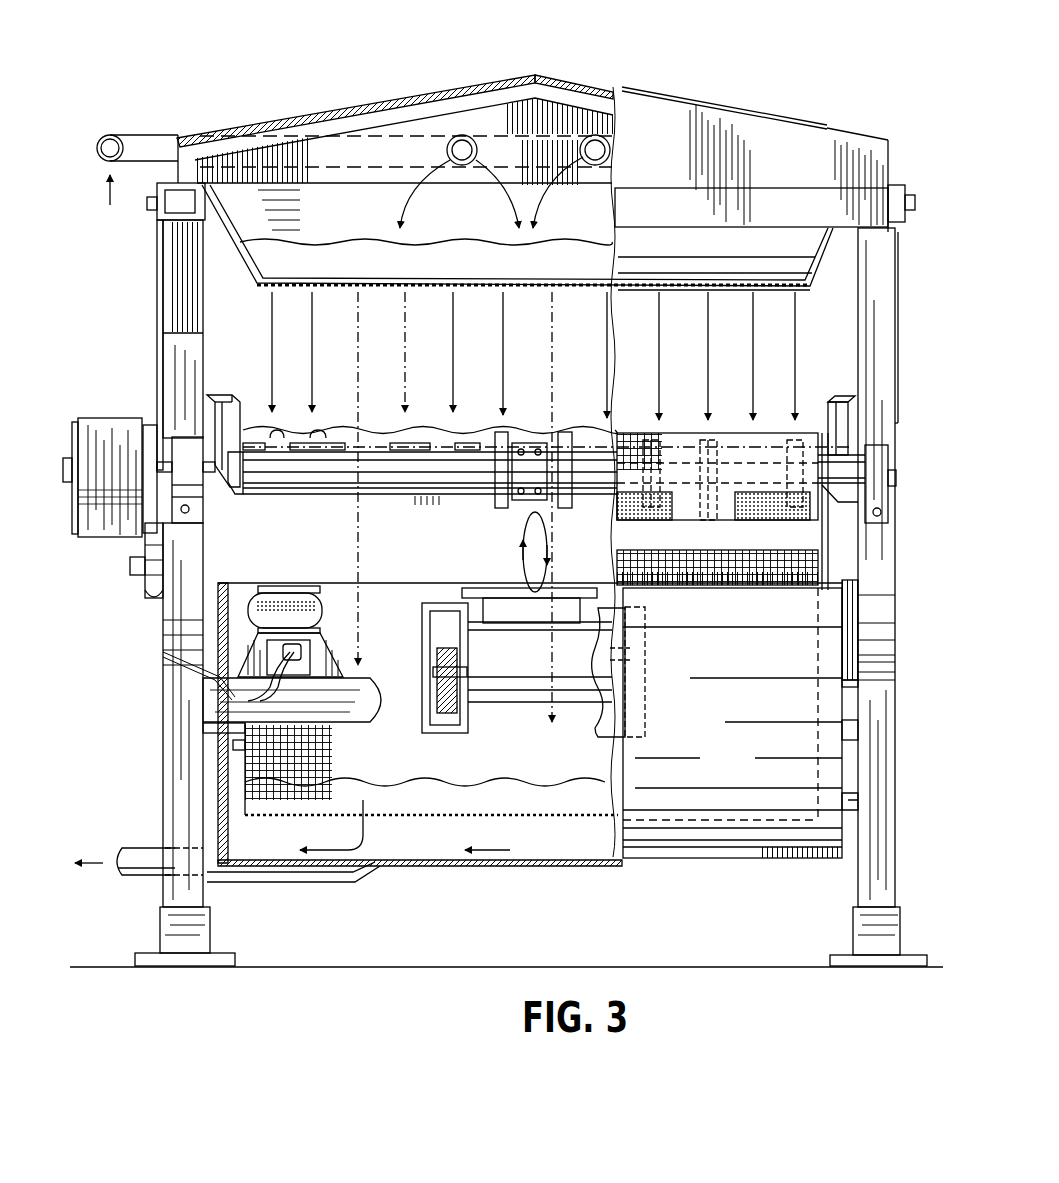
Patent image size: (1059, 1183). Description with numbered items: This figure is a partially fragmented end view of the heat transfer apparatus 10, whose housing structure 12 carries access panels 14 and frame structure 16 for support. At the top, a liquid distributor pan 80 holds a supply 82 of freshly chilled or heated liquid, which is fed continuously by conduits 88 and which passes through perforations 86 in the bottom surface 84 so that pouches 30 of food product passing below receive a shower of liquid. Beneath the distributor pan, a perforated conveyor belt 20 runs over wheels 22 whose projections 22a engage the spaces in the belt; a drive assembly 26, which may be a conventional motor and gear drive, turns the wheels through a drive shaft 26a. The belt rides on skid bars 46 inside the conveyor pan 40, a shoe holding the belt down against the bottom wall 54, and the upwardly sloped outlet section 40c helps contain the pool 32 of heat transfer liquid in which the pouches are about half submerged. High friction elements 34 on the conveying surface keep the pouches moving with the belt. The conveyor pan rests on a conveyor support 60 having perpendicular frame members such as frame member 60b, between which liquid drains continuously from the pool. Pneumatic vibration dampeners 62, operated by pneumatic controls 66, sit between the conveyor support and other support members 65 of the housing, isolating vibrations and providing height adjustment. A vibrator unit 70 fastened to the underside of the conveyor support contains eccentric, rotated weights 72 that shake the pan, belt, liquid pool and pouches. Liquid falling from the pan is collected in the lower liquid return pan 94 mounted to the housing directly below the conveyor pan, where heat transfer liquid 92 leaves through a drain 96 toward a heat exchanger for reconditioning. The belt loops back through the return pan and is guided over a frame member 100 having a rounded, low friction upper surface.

The apparatus 10 is at (720, 52).
The housing structure 12 is at (156, 284).
The access panels 14 is at (336, 104).
The frame structure 16 is at (163, 768).
The perforated conveyor belt 20 is at (730, 420).
The wheels 22 is at (532, 430).
The projections 22a is at (500, 506).
The drive assembly 26 is at (102, 416).
The drive shaft 26a is at (213, 470).
The pouches 30 is at (376, 404).
The pool of heat transfer liquid 32 is at (417, 419).
The high friction elements 34 is at (724, 520).
The conveyor pan 40 is at (840, 394).
The outlet section 40c is at (226, 396).
The skid bars 46 is at (312, 428).
The bottom wall 54 is at (298, 495).
The conveyor support 60 is at (384, 588).
The frame member 60b is at (410, 562).
The pneumatic vibration dampener 62 is at (321, 602).
The support members 65 is at (163, 652).
The pneumatic controls 66 is at (144, 588).
The vibrator unit 70 is at (578, 723).
The eccentric rotated weights 72 is at (437, 733).
The liquid distributor pan 80 is at (620, 300).
The supply of liquid 82 is at (346, 237).
The bottom surface 84 is at (345, 286).
The perforations 86 is at (488, 287).
The conduits 88 is at (125, 132).
The heat transfer liquid 92 is at (386, 782).
The liquid return pan 94 is at (738, 778).
The drain 96 is at (298, 887).
The frame member 100 is at (203, 729).